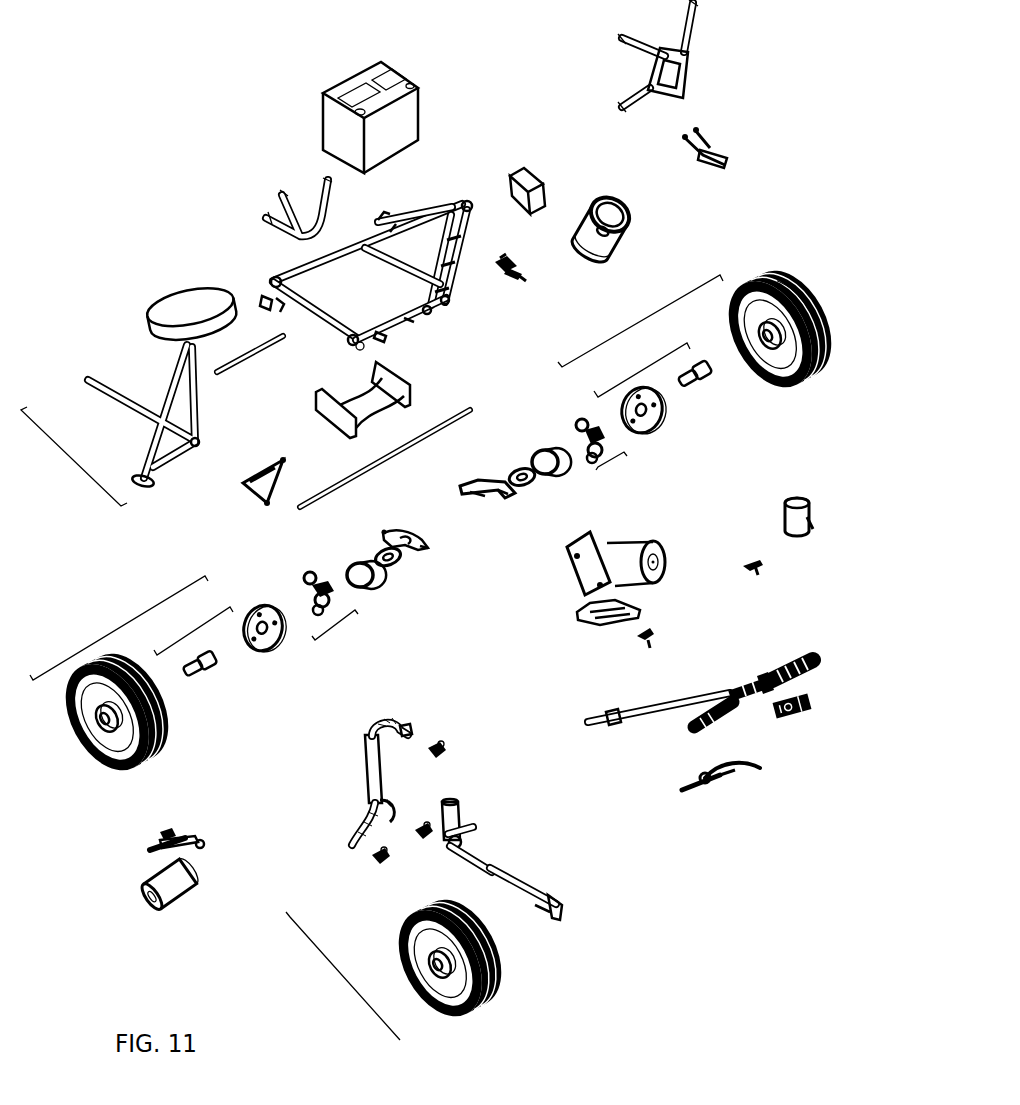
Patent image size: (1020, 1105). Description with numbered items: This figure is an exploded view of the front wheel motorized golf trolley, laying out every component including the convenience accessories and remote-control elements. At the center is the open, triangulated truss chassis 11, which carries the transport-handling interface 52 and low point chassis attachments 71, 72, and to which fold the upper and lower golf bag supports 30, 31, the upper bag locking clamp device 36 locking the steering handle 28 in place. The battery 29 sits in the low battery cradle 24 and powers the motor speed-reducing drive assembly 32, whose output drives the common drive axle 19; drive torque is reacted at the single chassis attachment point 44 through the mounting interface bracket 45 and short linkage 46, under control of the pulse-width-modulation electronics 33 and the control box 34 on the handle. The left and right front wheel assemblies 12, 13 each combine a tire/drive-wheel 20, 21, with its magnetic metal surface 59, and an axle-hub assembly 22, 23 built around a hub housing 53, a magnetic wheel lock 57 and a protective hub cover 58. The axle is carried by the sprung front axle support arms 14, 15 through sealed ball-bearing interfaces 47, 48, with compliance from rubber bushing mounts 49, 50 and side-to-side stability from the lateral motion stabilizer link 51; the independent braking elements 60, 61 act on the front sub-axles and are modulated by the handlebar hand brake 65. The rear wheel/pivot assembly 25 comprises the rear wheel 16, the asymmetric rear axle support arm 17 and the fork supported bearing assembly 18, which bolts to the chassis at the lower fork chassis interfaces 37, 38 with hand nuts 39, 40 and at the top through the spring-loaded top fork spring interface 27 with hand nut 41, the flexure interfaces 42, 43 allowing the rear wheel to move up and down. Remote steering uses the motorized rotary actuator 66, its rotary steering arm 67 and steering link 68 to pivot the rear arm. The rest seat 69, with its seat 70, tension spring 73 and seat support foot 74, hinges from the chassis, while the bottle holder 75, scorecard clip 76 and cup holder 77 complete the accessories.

The chassis 11 is at (403, 218).
The front wheel assembly 12 is at (120, 630).
The front wheel assembly 13 is at (641, 320).
The front axle support arm 14 is at (480, 498).
The front axle support arm 15 is at (426, 540).
The rear wheel 16 is at (504, 957).
The asymmetric rear axle support arm 17 is at (523, 852).
The fork supported bearing assembly 18 is at (367, 764).
The drive axle 19 is at (382, 458).
The tire/drive-wheel 20 is at (166, 745).
The tire/drive-wheel 21 is at (753, 383).
The axle-hub assembly 22 is at (192, 632).
The axle-hub assembly 23 is at (643, 370).
The battery cradle 24 is at (360, 402).
The rear wheel/pivot assembly 25 is at (338, 970).
The top fork spring interface 27 is at (512, 258).
The steering handle 28 is at (674, 716).
The battery 29 is at (420, 112).
The upper golf bag support 30 is at (693, 55).
The lower golf bag support 31 is at (305, 203).
The motor speed-reducing drive assembly 32 is at (612, 540).
The pulse-width-modulation electronics 33 is at (540, 182).
The control box 34 is at (808, 718).
The upper bag locking clamp device 36 is at (705, 150).
The lower fork chassis interface 37 is at (383, 338).
The lower fork chassis interface 38 is at (428, 314).
The hand nut 39 is at (378, 866).
The hand nut 40 is at (419, 845).
The hand nut 41 is at (438, 760).
The flexure interface 42 is at (350, 846).
The flexure interface 43 is at (398, 818).
The chassis attachment point 44 is at (450, 298).
The motor speed-reducing drive assembly mounting interface bracket 45 is at (588, 622).
The short linkage 46 is at (652, 636).
The sealed ball-bearing assembly interface 47 is at (390, 567).
The sealed ball-bearing assembly interface 48 is at (527, 486).
The rubber bushing mount 49 is at (394, 528).
The rubber bushing mount 50 is at (460, 485).
The lateral motion stabilizer link 51 is at (250, 478).
The transport-handling interface 52 is at (410, 322).
The hub housing 53 is at (690, 392).
The magnetic wheel lock 57 is at (652, 428).
The protective hub cover 58 is at (542, 450).
The magnetic metal surface 59 is at (792, 385).
The braking element 60 is at (340, 622).
The braking element 61 is at (612, 462).
The handlebar hand brake 65 is at (713, 784).
The motorized rotary actuator 66 is at (169, 889).
The rotary steering arm 67 is at (186, 836).
The steering link 68 is at (199, 848).
The rest seat 69 is at (66, 456).
The seat 70 is at (152, 303).
The low point chassis attachment 71 is at (350, 334).
The low point chassis attachment 72 is at (283, 301).
The tension spring 73 is at (273, 352).
The seat support foot 74 is at (143, 487).
The sand-grass-seed mixture bottle holder 75 is at (628, 211).
The scorecard clip 76 is at (759, 570).
The cup holder 77 is at (786, 518).